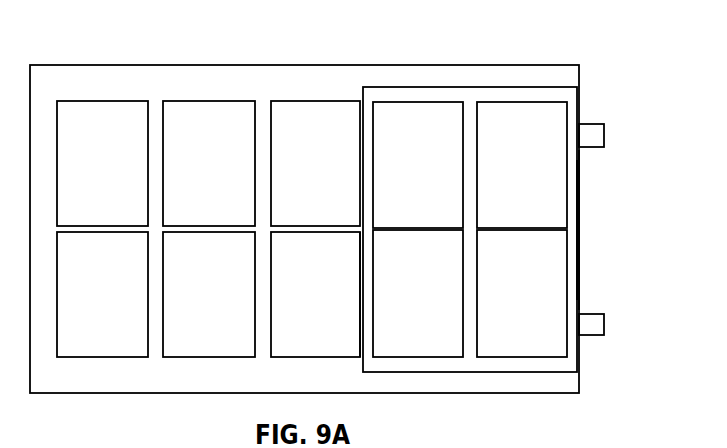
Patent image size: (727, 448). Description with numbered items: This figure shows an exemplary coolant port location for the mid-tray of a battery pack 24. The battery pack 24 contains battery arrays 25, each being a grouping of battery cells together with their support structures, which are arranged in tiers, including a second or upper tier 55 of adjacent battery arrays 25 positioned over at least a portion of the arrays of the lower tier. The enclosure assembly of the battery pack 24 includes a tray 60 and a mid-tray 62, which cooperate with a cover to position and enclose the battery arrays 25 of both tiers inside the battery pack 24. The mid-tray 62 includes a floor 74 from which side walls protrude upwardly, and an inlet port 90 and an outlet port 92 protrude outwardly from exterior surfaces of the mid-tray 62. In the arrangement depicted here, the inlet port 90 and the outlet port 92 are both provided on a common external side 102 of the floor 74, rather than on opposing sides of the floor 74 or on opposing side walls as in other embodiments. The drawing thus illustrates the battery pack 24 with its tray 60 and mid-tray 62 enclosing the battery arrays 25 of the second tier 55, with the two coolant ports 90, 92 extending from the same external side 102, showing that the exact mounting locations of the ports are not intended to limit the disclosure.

The battery pack 24 is at (521, 48).
The battery array 25 is at (88, 176).
The second tier 55 is at (544, 114).
The tray 60 is at (312, 193).
The mid-tray 62 is at (573, 221).
The floor 74 is at (368, 320).
The inlet port 90 is at (604, 325).
The outlet port 92 is at (604, 135).
The common external side 102 is at (579, 262).